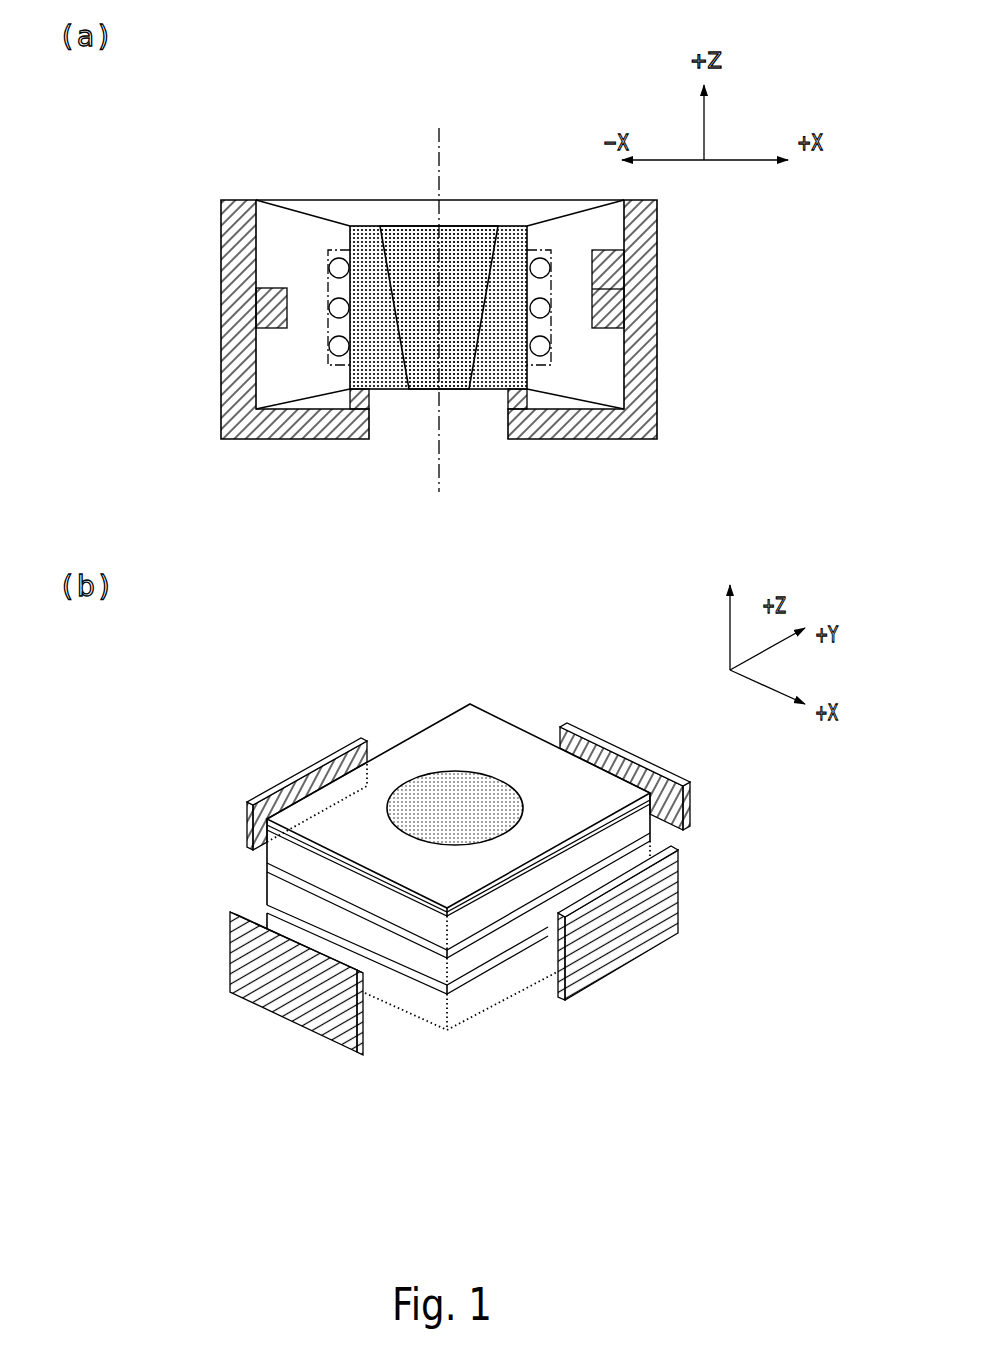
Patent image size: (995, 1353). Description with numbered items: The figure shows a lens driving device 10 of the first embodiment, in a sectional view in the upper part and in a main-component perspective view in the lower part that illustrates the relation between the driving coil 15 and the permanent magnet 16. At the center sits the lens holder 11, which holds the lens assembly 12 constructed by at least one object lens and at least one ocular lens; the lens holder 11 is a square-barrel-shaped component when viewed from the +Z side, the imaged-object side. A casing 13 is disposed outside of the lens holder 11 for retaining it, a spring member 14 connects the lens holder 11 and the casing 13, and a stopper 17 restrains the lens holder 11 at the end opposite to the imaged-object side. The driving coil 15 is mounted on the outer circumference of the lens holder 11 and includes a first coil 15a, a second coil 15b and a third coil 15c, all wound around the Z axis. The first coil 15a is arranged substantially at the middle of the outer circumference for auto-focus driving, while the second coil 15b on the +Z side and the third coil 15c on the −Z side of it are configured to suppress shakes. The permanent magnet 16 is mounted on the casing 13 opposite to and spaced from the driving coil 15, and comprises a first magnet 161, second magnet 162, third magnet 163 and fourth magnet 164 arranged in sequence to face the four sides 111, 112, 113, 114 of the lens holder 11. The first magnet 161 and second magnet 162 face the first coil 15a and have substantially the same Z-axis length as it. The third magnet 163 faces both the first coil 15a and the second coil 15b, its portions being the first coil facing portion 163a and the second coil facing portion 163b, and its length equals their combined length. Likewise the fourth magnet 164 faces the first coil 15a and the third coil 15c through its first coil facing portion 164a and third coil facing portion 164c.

The lens driving device 10 is at (392, 161).
The lens holder 11 is at (370, 230).
The first side of the lens holder 111 is at (420, 737).
The second side of the lens holder 112 is at (495, 713).
The third side of the lens holder 113 is at (508, 973).
The fourth side of the lens holder 114 is at (393, 995).
The lens assembly 12 is at (458, 248).
The casing 13 is at (237, 197).
The spring member 14 is at (300, 212).
The driving coil 15 is at (327, 255).
The first coil 15a is at (425, 968).
The second coil 15b is at (432, 922).
The third coil 15c is at (415, 1000).
The permanent magnet 16 is at (270, 305).
The first magnet 161 is at (247, 815).
The second magnet 162 is at (690, 815).
The third magnet 163 is at (780, 888).
The first coil facing portion 163a is at (650, 928).
The second coil facing portion 163b is at (653, 883).
The fourth magnet 164 is at (125, 947).
The first coil facing portion 164a is at (265, 965).
The third coil facing portion 164c is at (253, 975).
The stopper 17 is at (333, 402).